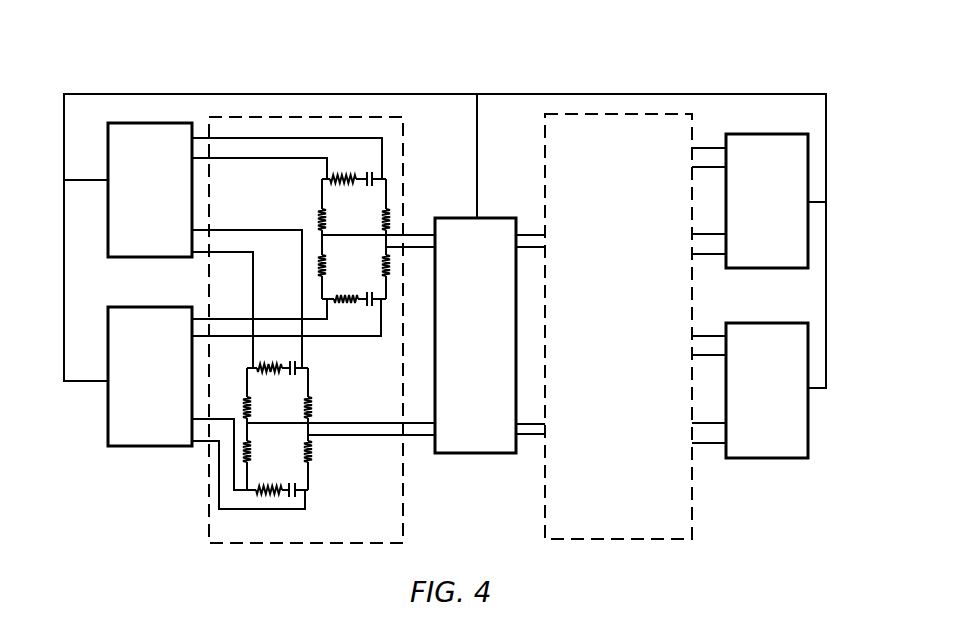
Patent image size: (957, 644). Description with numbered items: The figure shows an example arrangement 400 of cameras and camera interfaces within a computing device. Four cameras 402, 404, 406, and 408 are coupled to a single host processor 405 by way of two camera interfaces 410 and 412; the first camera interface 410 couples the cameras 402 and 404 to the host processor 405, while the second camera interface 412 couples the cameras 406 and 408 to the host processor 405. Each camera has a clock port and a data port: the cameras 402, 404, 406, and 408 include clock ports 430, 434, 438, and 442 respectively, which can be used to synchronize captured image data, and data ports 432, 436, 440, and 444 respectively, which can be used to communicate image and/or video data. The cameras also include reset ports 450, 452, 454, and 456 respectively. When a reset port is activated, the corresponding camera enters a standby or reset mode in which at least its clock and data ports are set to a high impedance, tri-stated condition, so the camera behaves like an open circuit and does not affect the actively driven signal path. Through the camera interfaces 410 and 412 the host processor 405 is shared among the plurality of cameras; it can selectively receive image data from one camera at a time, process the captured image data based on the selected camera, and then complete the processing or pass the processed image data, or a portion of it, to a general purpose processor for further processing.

The arrangement 400 is at (855, 90).
The camera 402 is at (150, 191).
The camera 404 is at (150, 377).
The host processor 405 is at (475, 335).
The camera 406 is at (767, 201).
The camera 408 is at (767, 390).
The camera interface 410 is at (272, 117).
The camera interface 412 is at (606, 114).
The clock port 430 is at (193, 147).
The data port 432 is at (193, 240).
The clock port 434 is at (193, 328).
The data port 436 is at (193, 430).
The clock port 438 is at (724, 158).
The data port 440 is at (724, 245).
The clock port 442 is at (724, 346).
The data port 444 is at (724, 433).
The reset port 450 is at (105, 182).
The reset port 452 is at (105, 383).
The reset port 454 is at (809, 210).
The reset port 456 is at (809, 405).